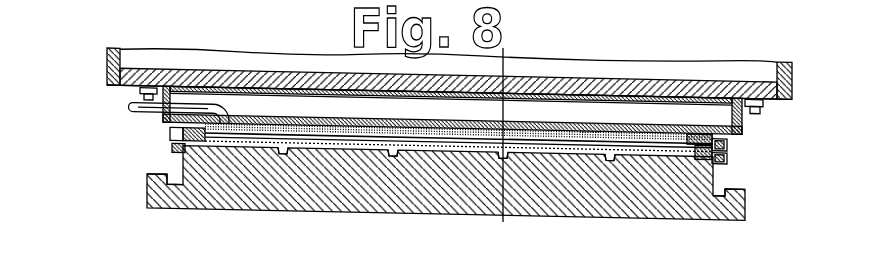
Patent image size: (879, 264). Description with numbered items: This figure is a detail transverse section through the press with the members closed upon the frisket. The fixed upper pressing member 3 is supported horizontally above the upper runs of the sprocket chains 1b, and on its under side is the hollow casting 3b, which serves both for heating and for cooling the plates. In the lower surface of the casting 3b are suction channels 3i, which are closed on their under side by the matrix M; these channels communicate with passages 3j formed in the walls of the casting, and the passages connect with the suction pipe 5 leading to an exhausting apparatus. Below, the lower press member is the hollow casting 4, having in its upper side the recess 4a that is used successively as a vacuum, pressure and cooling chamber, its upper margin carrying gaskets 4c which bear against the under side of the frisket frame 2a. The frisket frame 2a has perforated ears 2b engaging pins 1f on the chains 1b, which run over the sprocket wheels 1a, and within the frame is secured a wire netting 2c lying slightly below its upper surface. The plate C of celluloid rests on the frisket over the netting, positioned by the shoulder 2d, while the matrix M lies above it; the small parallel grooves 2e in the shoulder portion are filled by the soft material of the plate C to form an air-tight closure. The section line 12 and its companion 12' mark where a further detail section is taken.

The upper pressing member 3 is at (449, 80).
The hollow casting 3b is at (351, 107).
The suction channels 3i is at (231, 114).
The passages 3j is at (208, 109).
The suction pipe 5 is at (143, 115).
The plate C is at (313, 122).
The matrix M is at (503, 62).
The hollow casting 4 is at (308, 185).
The recess or chamber 4a is at (395, 152).
The gaskets 4c is at (170, 170).
The perforated ears 2b is at (170, 128).
The pins 1f is at (172, 134).
The sprocket chains 1b is at (183, 151).
The frisket frame 2a is at (170, 143).
The sprocket wheels 1a is at (728, 160).
The shoulder 2d is at (708, 134).
The grooves 2e is at (702, 134).
The wire netting 2c is at (593, 133).
The section line (upper) 12' is at (506, 83).
The section line 12 is at (503, 187).